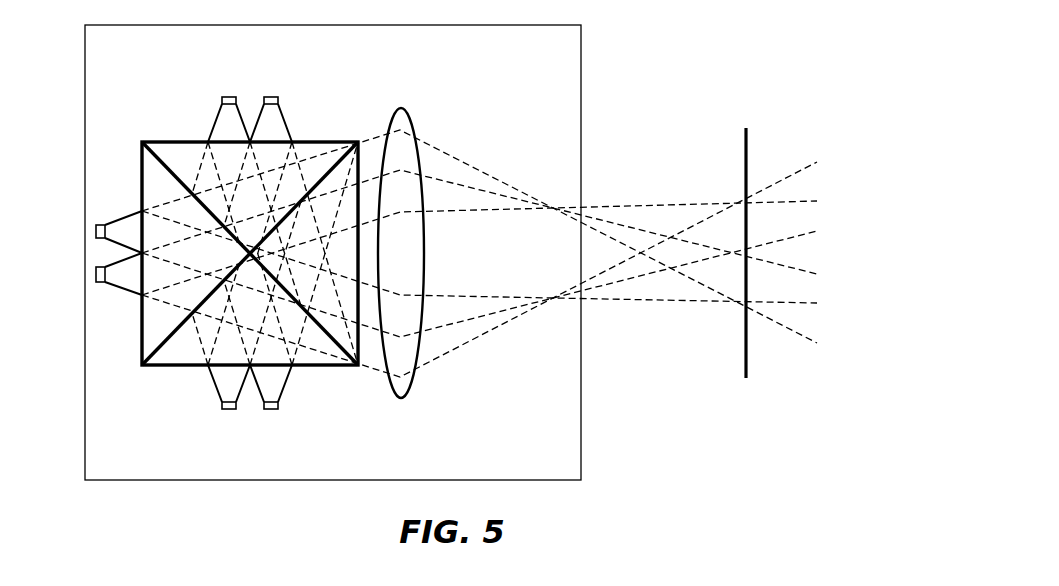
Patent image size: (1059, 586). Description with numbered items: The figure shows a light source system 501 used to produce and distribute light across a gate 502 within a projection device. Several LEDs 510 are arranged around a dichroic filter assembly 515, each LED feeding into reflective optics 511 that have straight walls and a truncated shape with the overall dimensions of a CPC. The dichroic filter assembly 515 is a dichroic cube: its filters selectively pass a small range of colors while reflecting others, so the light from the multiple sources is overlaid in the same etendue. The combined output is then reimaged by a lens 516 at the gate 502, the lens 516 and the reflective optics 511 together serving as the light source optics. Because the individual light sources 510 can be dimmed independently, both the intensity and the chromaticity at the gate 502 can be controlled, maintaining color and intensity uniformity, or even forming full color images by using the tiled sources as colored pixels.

The light source system 501 is at (331, 25).
The gate 502 is at (748, 142).
The LEDs 510 is at (96, 232).
The reflective optics 511 is at (124, 214).
The dichroic filter assembly 515 is at (188, 142).
The lens 516 is at (410, 123).